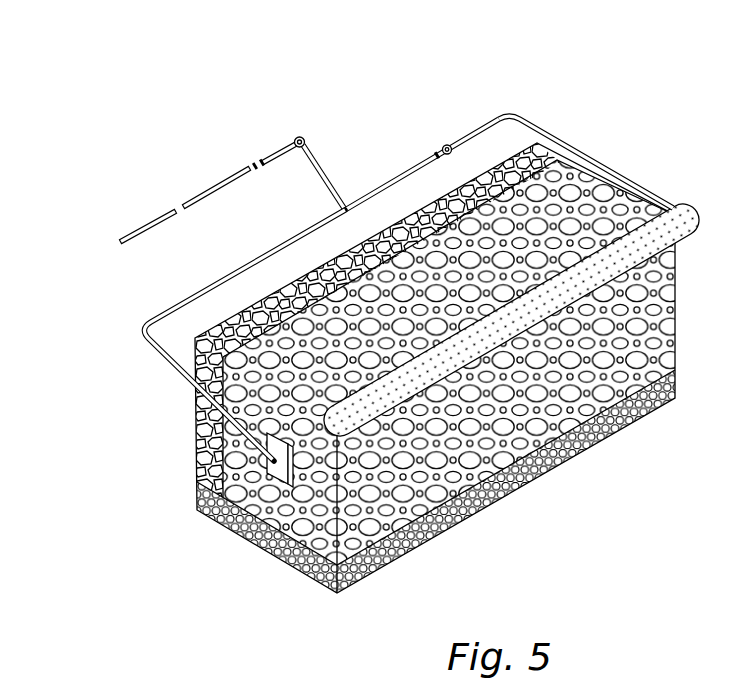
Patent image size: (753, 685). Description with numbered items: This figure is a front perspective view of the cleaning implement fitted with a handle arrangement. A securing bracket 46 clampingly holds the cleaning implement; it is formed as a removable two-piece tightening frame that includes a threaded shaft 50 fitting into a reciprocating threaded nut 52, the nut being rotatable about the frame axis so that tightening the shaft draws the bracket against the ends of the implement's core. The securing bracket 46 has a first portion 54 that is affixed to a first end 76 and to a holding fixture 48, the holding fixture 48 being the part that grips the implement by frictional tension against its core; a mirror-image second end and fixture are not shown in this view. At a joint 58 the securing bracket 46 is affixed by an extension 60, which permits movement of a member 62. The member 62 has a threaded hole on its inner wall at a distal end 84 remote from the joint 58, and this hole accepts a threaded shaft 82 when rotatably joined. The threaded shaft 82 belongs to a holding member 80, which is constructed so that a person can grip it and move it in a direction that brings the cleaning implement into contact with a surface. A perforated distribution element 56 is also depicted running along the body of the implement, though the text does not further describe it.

The securing bracket 46 is at (361, 173).
The holding fixture 48 is at (252, 508).
The threaded shaft 50 is at (437, 153).
The reciprocating threaded nut 52 is at (448, 148).
The first portion 54 is at (140, 332).
The perforated distribution pipe 56 is at (533, 137).
The joint 58 is at (302, 137).
The extension 60 is at (320, 177).
The member 62 is at (270, 157).
The first end 76 is at (278, 467).
The holding member 80 is at (197, 195).
The threaded shaft 82 is at (247, 167).
The distal end 84 is at (259, 169).